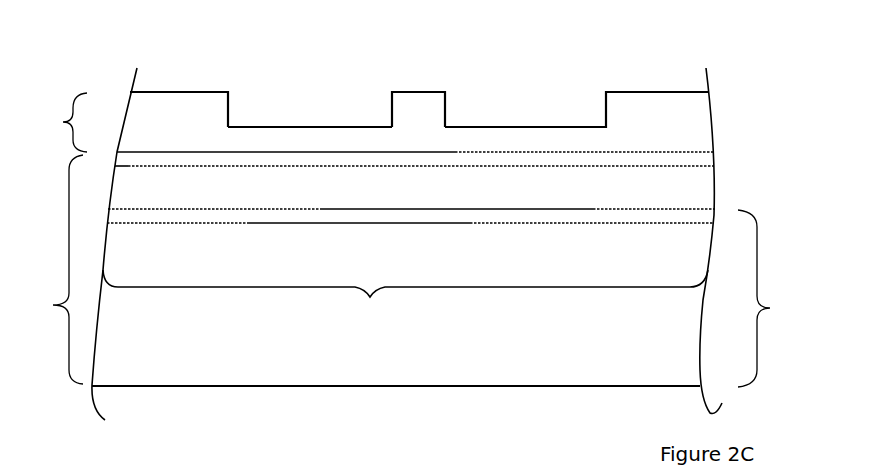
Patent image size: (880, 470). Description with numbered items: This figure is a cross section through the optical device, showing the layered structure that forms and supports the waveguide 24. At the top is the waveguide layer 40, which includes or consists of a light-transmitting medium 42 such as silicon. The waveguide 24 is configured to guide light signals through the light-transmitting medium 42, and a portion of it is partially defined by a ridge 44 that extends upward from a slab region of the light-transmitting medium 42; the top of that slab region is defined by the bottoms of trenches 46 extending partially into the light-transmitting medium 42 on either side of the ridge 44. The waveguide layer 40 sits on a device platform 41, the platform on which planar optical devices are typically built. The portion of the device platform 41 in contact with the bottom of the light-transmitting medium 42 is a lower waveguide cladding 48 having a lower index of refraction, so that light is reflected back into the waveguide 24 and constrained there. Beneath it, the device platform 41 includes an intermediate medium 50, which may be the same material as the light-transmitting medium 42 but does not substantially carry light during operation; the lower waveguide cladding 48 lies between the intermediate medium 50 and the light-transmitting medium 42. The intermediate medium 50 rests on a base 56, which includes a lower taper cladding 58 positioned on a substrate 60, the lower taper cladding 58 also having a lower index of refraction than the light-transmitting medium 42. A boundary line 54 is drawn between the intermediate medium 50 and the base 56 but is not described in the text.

The waveguide 24 is at (392, 68).
The waveguide layer 40 is at (59, 122).
The device platform 41 is at (52, 269).
The light-transmitting medium 42 is at (200, 102).
The ridge 44 is at (410, 92).
The trenches 46 is at (230, 134).
The lower waveguide cladding 48 is at (198, 160).
The intermediate medium 50 is at (412, 193).
The layer boundary 54 is at (405, 301).
The base 56 is at (770, 298).
The lower taper cladding 58 is at (438, 217).
The substrate 60 is at (312, 370).